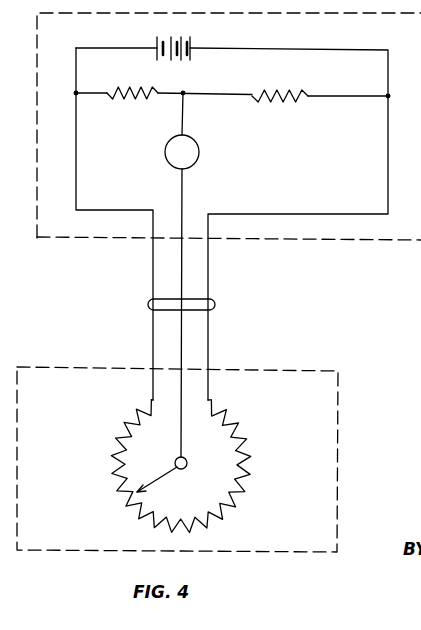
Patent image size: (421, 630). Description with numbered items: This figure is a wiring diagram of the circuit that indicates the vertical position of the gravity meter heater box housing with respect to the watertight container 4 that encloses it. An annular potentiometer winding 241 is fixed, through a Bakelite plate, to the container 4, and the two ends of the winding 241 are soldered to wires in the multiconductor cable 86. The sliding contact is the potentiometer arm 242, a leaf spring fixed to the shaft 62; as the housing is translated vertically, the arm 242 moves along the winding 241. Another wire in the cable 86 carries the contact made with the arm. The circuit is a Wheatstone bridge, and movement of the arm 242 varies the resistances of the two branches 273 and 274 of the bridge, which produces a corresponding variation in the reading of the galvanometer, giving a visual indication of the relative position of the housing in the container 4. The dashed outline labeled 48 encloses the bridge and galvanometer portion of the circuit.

The multiconductor cable 86 is at (215, 304).
The computer unit 48 is at (400, 229).
The watertight container 4 is at (330, 392).
The annular potentiometer winding 241 is at (251, 463).
The potentiometer arm 242 is at (157, 487).
The shaft 62 is at (187, 461).
The bridge branch 273 is at (111, 453).
The bridge branch 274 is at (223, 512).